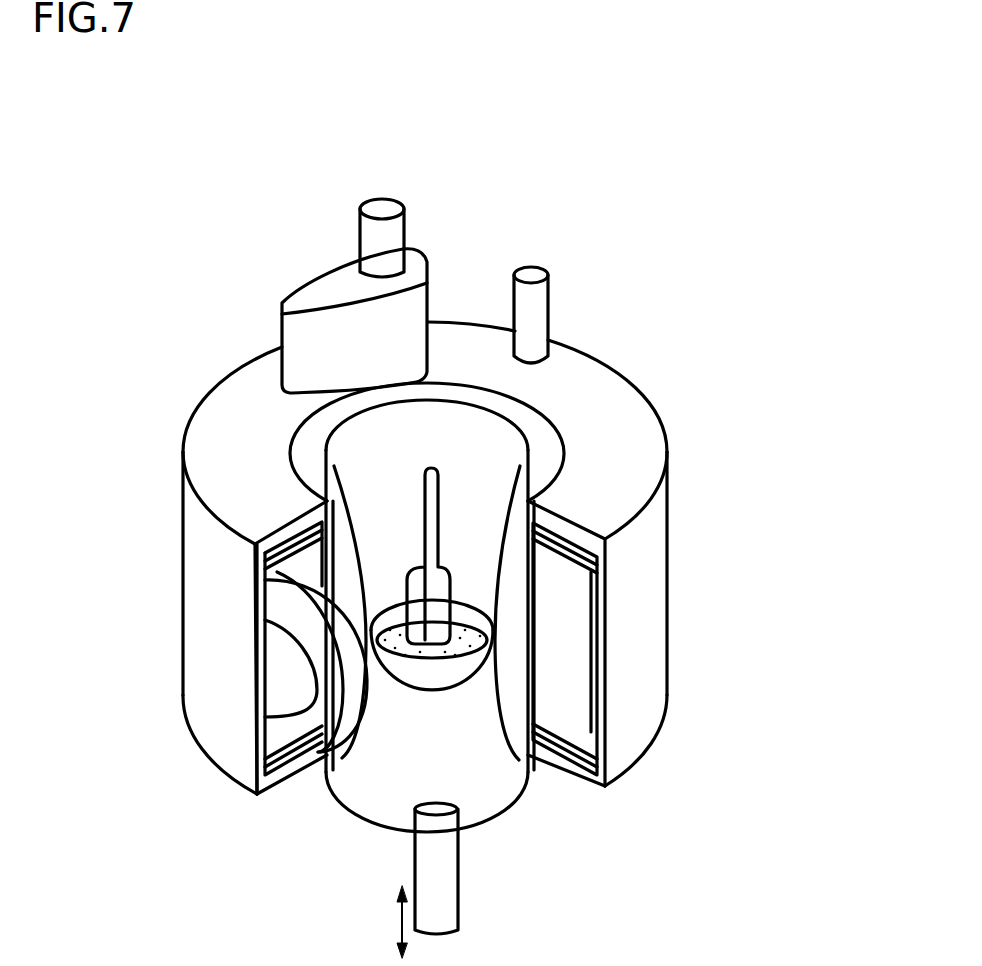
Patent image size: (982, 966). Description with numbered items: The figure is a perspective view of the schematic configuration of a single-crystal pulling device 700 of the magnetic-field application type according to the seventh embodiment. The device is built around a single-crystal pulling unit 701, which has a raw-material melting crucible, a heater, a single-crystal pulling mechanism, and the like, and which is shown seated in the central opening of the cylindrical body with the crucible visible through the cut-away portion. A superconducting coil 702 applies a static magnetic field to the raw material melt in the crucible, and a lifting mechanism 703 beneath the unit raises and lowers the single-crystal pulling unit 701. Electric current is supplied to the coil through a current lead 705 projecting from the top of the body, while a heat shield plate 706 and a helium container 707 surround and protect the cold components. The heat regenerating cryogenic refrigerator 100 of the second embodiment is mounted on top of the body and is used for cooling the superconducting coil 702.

The single-crystal pulling device 700 is at (703, 513).
The single-crystal pulling unit 701 is at (520, 787).
The superconducting coil 702 is at (305, 740).
The lifting mechanism 703 is at (445, 890).
The current lead 705 is at (540, 313).
The heat shield plate 706 is at (268, 552).
The helium container 707 is at (262, 558).
The heat regenerating cryogenic refrigerator 100 is at (370, 240).